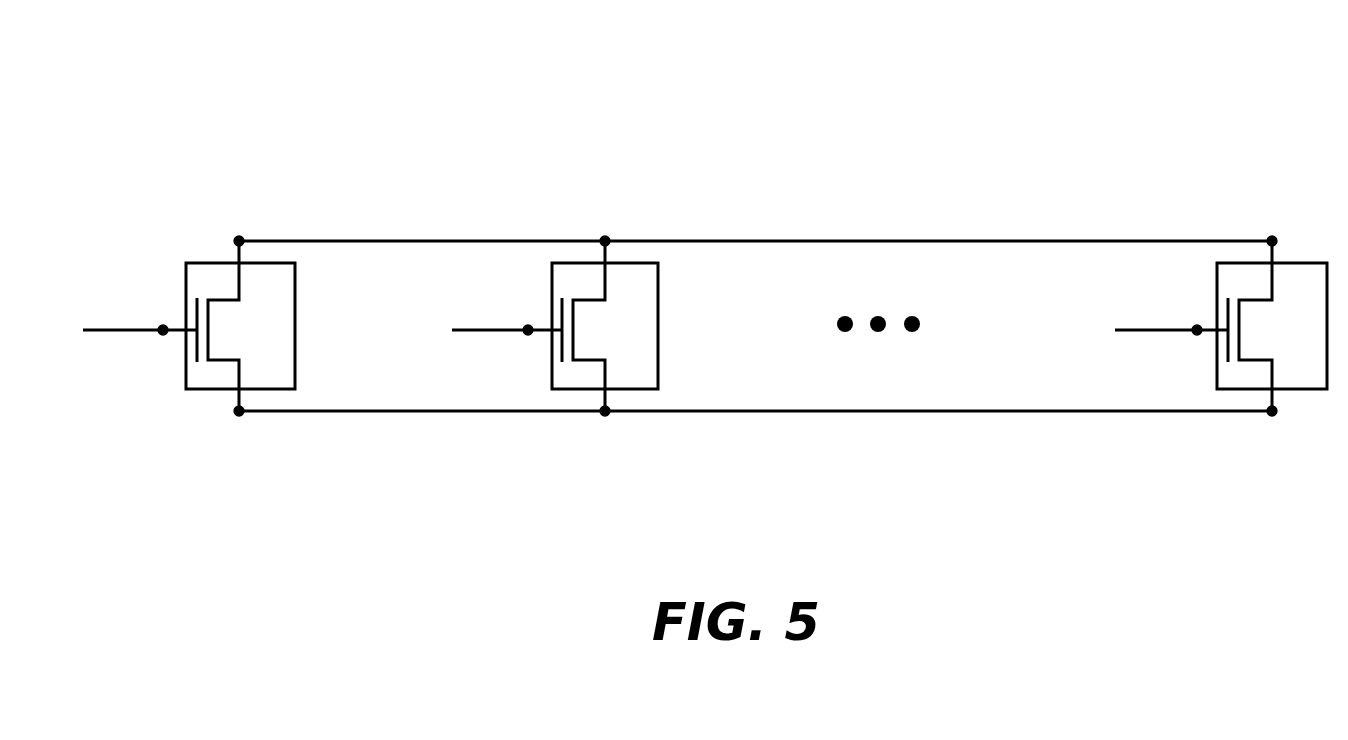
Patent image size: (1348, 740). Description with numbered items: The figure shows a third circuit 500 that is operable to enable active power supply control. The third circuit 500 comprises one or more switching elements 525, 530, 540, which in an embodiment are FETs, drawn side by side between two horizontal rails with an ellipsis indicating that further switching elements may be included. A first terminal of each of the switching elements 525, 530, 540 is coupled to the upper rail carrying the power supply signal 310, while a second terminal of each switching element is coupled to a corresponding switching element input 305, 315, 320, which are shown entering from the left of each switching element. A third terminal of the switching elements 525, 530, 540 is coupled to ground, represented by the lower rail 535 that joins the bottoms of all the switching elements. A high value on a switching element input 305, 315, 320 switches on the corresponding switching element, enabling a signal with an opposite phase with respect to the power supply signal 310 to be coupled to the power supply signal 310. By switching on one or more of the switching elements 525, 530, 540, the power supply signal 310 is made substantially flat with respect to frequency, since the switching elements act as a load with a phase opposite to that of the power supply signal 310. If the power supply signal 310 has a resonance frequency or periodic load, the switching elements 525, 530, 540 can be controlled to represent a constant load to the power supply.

The power supply signal 310 is at (239, 236).
The second voltage line 535 is at (239, 416).
The switching element 525 is at (186, 298).
The switching element 530 is at (552, 298).
The switching element 540 is at (1217, 298).
The switching element input 305 is at (104, 328).
The switching element input 315 is at (470, 328).
The switching element input 320 is at (1138, 328).
The third circuit 500 is at (765, 567).